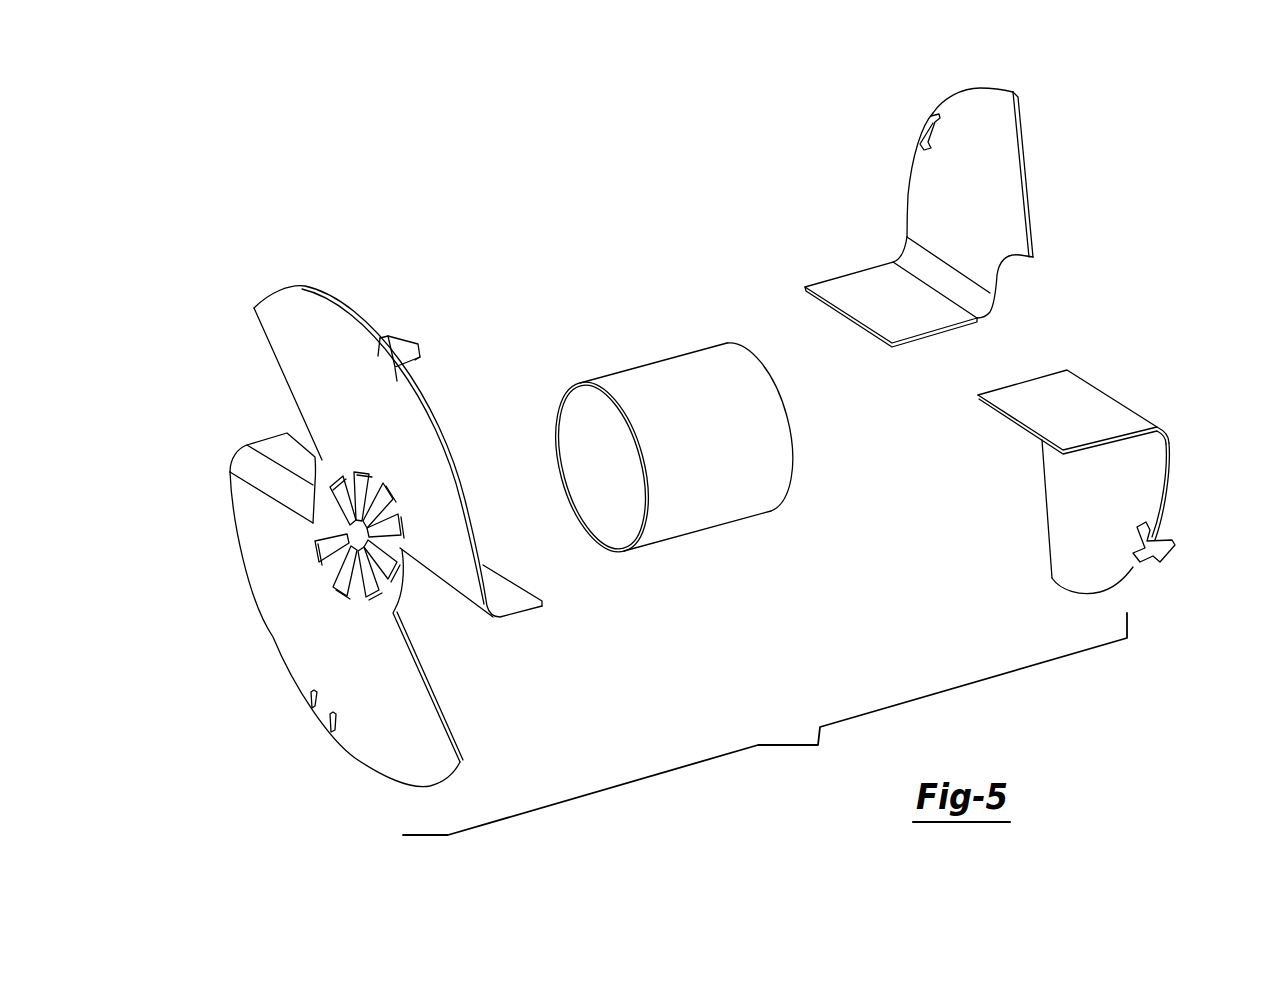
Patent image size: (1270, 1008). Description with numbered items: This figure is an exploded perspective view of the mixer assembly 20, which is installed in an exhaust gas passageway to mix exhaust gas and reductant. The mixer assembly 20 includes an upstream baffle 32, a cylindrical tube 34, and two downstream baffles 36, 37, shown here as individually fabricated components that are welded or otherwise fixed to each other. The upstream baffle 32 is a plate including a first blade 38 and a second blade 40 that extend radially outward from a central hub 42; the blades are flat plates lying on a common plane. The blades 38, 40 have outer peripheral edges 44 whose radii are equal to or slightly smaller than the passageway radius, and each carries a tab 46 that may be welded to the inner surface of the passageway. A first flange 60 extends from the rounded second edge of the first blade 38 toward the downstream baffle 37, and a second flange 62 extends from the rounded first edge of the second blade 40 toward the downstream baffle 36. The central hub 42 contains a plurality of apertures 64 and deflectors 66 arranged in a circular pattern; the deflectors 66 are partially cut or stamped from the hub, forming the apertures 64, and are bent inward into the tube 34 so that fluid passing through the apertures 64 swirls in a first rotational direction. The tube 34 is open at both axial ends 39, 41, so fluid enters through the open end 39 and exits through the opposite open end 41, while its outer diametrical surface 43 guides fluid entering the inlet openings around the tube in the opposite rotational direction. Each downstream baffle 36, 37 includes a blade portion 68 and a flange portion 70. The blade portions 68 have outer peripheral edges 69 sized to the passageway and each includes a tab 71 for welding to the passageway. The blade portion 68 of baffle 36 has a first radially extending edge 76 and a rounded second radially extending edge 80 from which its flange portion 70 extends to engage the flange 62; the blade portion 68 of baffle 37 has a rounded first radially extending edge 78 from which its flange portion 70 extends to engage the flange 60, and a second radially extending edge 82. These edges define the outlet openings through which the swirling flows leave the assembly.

The mixer assembly 20 is at (765, 724).
The upstream baffle 32 is at (296, 213).
The cylindrical tube 34 is at (676, 373).
The downstream baffle 36 is at (932, 92).
The downstream baffle 37 is at (1183, 452).
The first blade 38 is at (338, 285).
The open end 39 is at (563, 478).
The second blade 40 is at (384, 790).
The open end 41 is at (786, 428).
The central hub 42 is at (397, 604).
The outer diametrical surface 43 is at (690, 512).
The outer peripheral edges 44 is at (444, 443).
The tab 46 is at (398, 338).
The first flange 60 is at (528, 616).
The second flange 62 is at (272, 445).
The apertures 64 is at (360, 606).
The deflectors 66 is at (345, 565).
The blade portion 68 is at (1012, 193).
The outer peripheral edges 69 is at (1015, 100).
The flange portion 70 is at (838, 293).
The tab 71 is at (925, 118).
The first radially extending edge 76 is at (1033, 230).
The first radially extending edge 78 is at (1135, 405).
The second radially extending edge 80 is at (990, 318).
The second radially extending edge 82 is at (1046, 535).